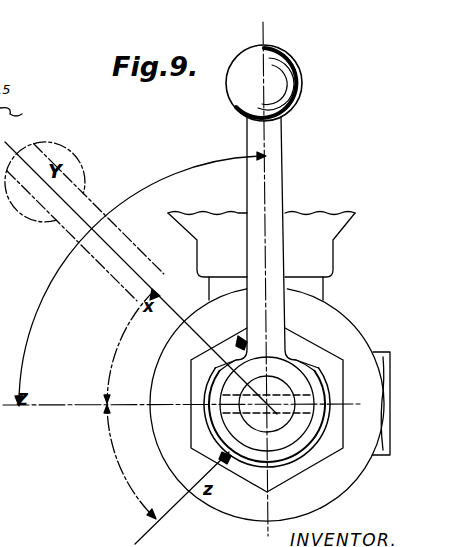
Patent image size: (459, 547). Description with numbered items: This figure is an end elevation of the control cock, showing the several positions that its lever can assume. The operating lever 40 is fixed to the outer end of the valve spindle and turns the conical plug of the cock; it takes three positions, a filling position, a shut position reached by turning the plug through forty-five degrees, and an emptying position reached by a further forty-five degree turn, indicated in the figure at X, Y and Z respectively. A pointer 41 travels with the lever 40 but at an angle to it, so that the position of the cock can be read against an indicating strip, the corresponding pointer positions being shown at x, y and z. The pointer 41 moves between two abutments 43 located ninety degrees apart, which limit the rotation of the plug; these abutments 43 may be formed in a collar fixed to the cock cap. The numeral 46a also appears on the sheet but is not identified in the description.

The operating lever 40 is at (280, 158).
The pointer 41 is at (213, 352).
The abutments 43 is at (243, 345).
The guide member 46a is at (24, 113).